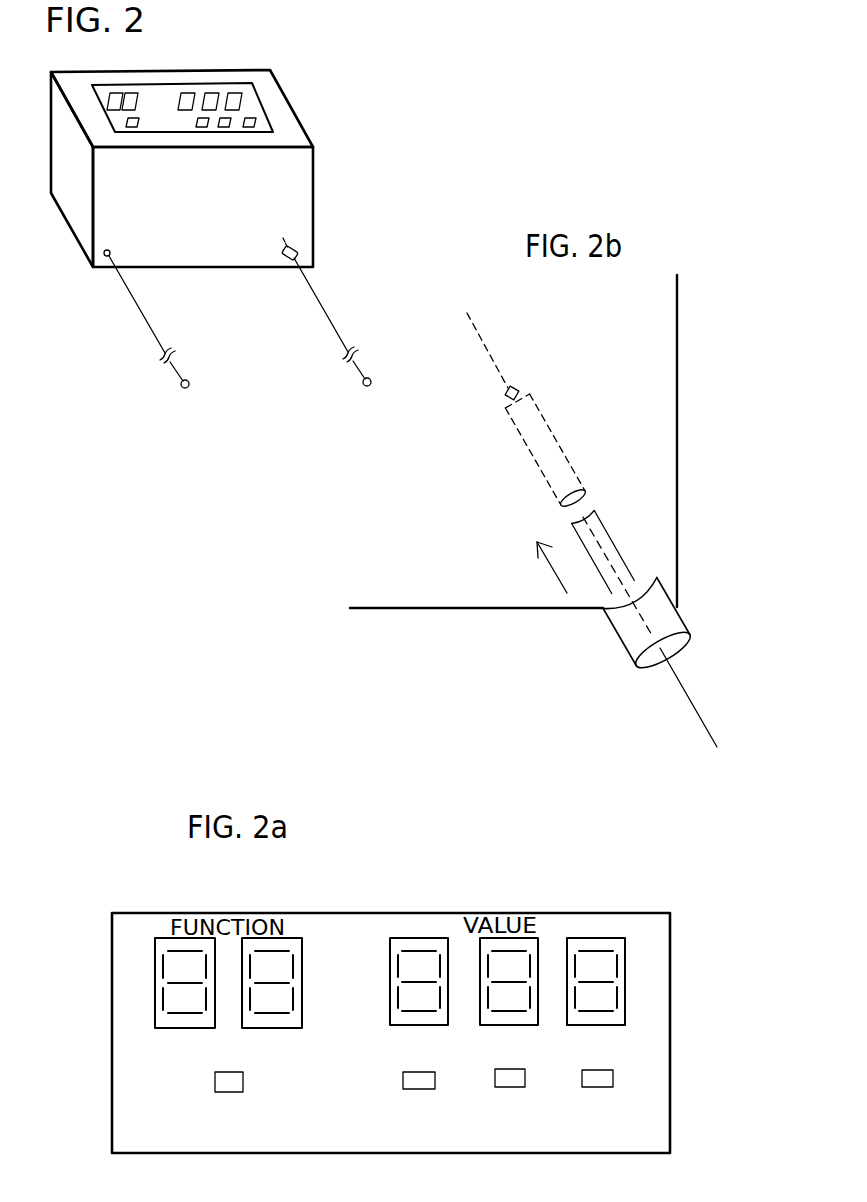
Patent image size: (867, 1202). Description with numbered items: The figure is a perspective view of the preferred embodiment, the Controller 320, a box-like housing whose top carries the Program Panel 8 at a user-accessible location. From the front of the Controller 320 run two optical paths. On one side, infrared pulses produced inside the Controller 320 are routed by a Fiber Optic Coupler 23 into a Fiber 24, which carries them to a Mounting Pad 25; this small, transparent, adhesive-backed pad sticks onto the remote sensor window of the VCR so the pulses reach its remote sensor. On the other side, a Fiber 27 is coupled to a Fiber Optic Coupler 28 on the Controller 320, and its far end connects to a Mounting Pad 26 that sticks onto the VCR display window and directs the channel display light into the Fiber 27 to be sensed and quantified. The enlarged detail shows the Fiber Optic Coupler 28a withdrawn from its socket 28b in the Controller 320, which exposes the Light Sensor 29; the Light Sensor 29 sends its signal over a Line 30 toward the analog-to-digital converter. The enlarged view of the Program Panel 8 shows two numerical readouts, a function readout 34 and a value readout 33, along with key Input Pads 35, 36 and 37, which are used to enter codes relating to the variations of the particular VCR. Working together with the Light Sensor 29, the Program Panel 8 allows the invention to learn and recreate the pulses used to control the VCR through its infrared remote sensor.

In FIG. 2, the Program Panel 8 is at (217, 83).
In FIG. 2, the Controller 320 is at (302, 122).
In FIG. 2B, the Controller 320 is at (678, 413).
In FIG. 2, the Fiber Optic Coupler 23 is at (108, 250).
In FIG. 2, the Fiber 24 is at (137, 300).
In FIG. 2, the Mounting Pad 25 is at (189, 382).
In FIG. 2, the Mounting Pad 26 is at (363, 382).
In FIG. 2, the Fiber 27 is at (308, 292).
In FIG. 2B, the Fiber 27 is at (697, 707).
In FIG. 2, the Fiber Optic Coupler 28 is at (287, 259).
In FIG. 2B, the Fiber Optic Coupler 28a is at (680, 617).
In FIG. 2B, the socket 28b is at (568, 458).
In FIG. 2B, the Light Sensor 29 is at (518, 386).
In FIG. 2B, the Line 30 is at (490, 353).
In FIG. 2A, the numerical readout 33 is at (585, 938).
In FIG. 2A, the numerical readout 34 is at (263, 937).
In FIG. 2A, the key Input Pad 35 is at (615, 1070).
In FIG. 2A, the key Input Pad 36 is at (215, 1080).
In FIG. 2A, the key Input Pad 37 is at (403, 1083).